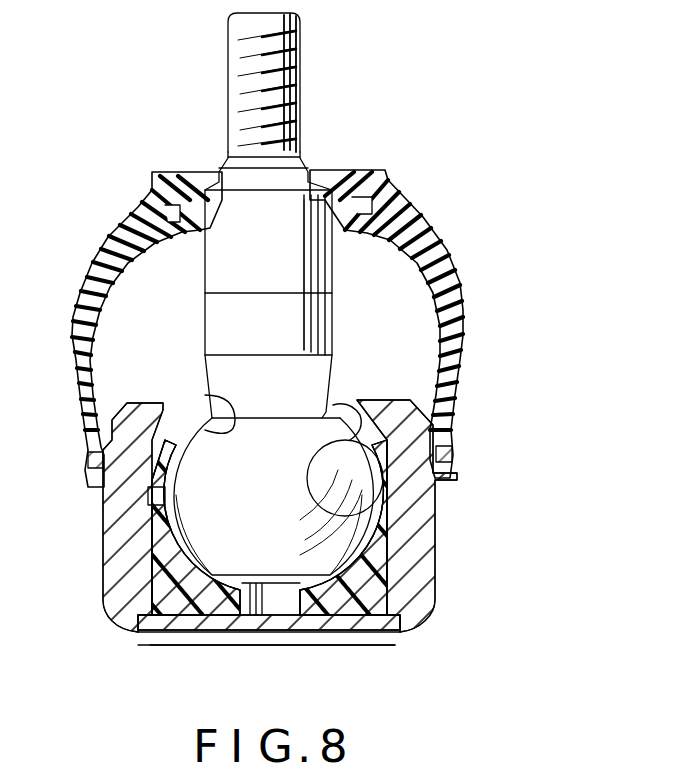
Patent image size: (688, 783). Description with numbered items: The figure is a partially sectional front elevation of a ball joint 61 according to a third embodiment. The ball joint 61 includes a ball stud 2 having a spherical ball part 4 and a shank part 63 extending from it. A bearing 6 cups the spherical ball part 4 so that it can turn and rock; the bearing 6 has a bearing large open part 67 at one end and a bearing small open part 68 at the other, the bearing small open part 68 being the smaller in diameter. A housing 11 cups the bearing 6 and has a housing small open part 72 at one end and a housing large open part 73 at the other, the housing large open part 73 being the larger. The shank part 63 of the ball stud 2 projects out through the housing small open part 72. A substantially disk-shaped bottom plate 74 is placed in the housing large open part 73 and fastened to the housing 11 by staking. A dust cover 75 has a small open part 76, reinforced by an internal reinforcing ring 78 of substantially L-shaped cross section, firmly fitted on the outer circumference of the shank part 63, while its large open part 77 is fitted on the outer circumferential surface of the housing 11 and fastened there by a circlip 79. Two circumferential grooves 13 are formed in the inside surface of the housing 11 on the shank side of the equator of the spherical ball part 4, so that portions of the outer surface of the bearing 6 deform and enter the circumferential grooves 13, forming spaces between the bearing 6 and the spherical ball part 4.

The ball stud 2 is at (336, 268).
The shank part 63 is at (336, 322).
The dust cover 75 is at (466, 366).
The small open part 76 is at (215, 195).
The internal reinforcing ring 78 is at (385, 197).
The ball joint 61 is at (406, 170).
The bearing 6 is at (412, 535).
The housing 11 is at (438, 569).
The spherical ball part 4 is at (197, 538).
The circumferential grooves 13 is at (170, 480).
The bearing large open part 67 is at (215, 392).
The housing small open part 72 is at (340, 412).
The large open part 77 is at (108, 420).
The circlip 79 is at (455, 448).
The bottom plate 74 is at (210, 632).
The housing large open part 73 is at (272, 638).
The bearing small open part 68 is at (348, 628).